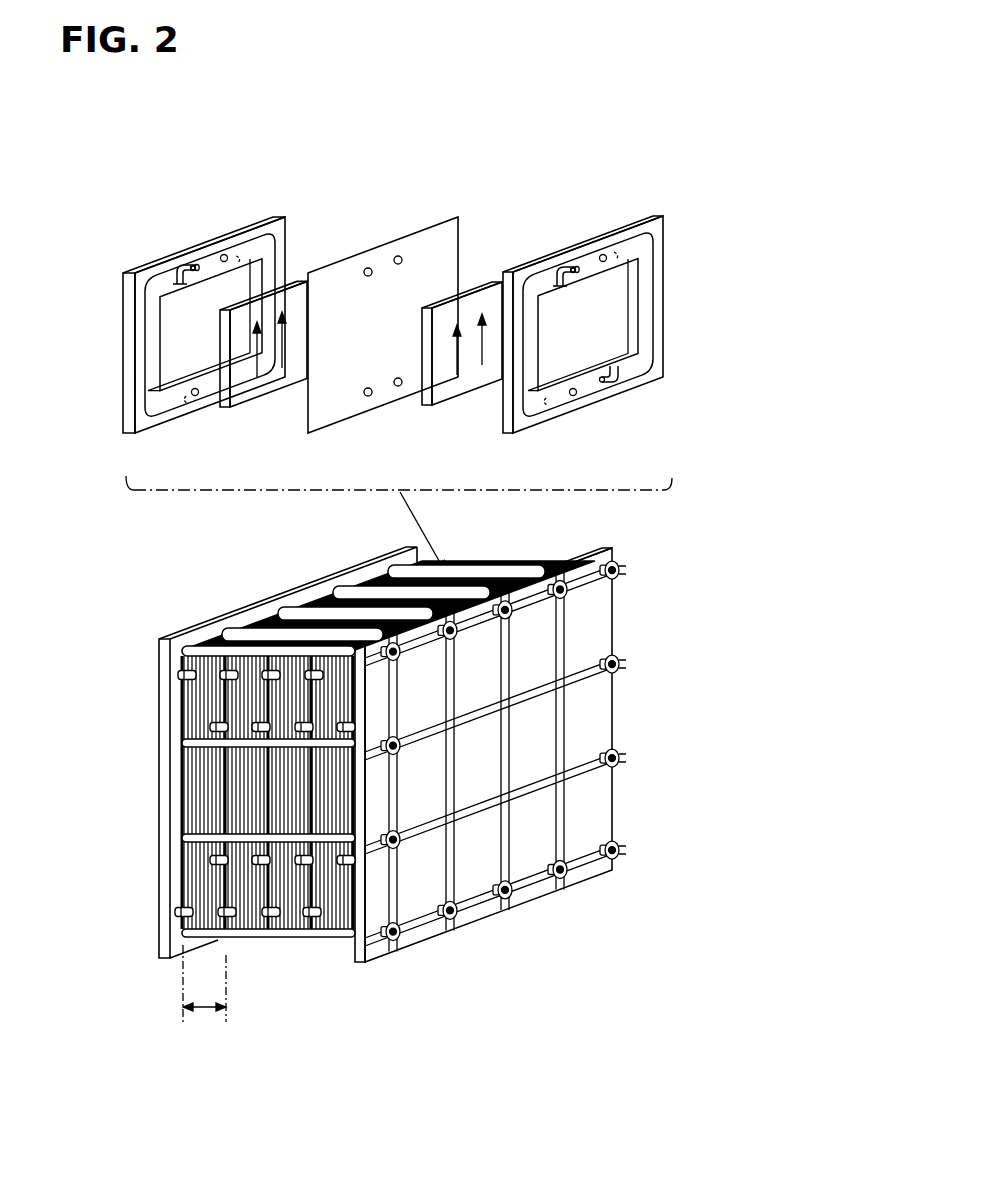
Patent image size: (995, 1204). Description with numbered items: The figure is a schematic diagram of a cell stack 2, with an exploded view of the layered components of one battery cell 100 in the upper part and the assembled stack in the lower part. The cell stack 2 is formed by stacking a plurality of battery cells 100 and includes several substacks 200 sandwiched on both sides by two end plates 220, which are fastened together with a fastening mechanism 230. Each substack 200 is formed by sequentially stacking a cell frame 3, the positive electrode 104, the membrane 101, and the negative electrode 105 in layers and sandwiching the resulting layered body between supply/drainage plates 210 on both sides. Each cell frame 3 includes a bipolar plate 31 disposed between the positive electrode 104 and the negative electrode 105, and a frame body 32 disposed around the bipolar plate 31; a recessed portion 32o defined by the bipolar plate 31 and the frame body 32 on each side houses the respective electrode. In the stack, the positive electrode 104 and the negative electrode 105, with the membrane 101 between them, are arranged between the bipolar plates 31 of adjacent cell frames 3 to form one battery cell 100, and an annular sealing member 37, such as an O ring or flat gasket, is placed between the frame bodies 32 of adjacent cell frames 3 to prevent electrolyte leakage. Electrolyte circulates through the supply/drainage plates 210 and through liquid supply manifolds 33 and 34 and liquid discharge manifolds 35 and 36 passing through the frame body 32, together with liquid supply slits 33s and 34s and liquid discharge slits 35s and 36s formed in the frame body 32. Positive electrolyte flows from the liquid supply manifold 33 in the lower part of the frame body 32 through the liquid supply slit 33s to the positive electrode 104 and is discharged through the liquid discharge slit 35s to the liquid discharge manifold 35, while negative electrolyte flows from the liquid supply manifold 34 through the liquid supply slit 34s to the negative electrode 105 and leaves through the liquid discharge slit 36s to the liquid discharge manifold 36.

The cell stack 2 is at (379, 797).
The cell frame 3 is at (408, 324).
The bipolar plate 31 is at (180, 348).
The frame body 32 is at (130, 340).
The recessed portion 32o is at (247, 283).
The liquid supply manifold 33 is at (637, 388).
The liquid supply slit 33s is at (623, 365).
The liquid supply manifold 34 is at (193, 397).
The liquid supply slit 34s is at (188, 398).
The liquid discharge manifold 35 is at (180, 266).
The liquid discharge slit 35s is at (163, 262).
The liquid discharge manifold 36 is at (224, 254).
The liquid discharge slit 36s is at (250, 258).
The annular sealing member 37 is at (253, 262).
The battery cell 100 is at (408, 332).
The membrane 101 is at (410, 230).
The positive electrode 104 is at (277, 396).
The negative electrode 105 is at (450, 393).
The substack 200 is at (205, 1000).
The supply/drainage plate 210 is at (336, 764).
The end plate 220 is at (160, 655).
The fastening mechanism 230 is at (313, 610).